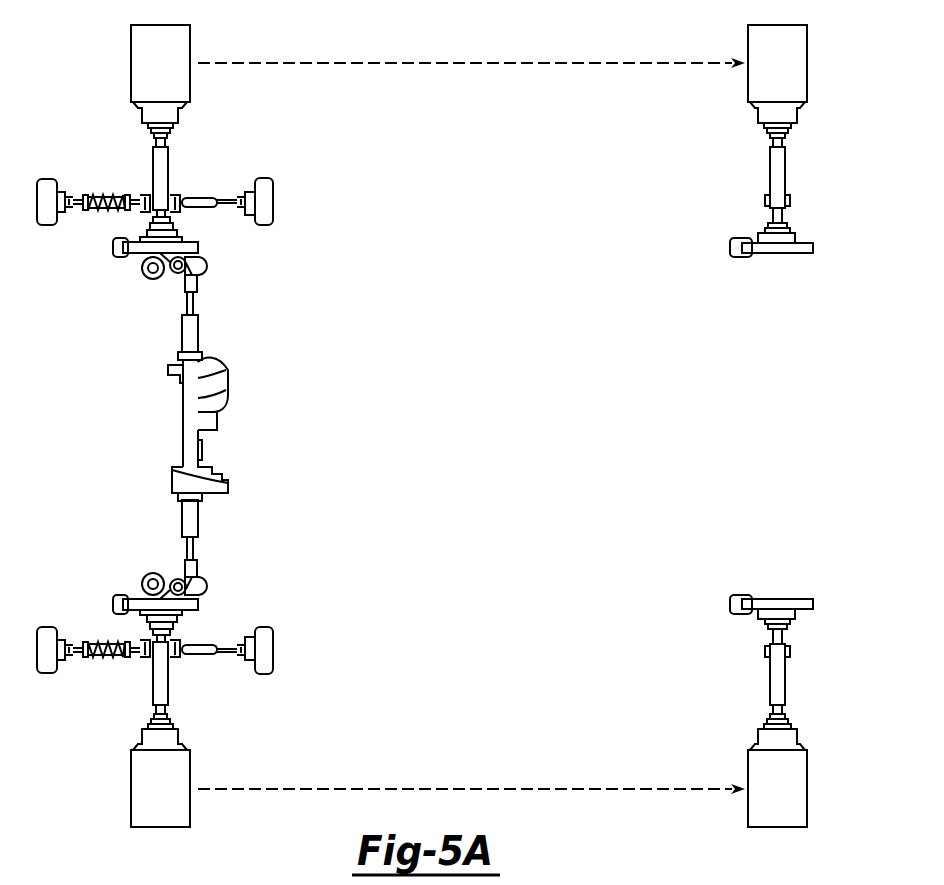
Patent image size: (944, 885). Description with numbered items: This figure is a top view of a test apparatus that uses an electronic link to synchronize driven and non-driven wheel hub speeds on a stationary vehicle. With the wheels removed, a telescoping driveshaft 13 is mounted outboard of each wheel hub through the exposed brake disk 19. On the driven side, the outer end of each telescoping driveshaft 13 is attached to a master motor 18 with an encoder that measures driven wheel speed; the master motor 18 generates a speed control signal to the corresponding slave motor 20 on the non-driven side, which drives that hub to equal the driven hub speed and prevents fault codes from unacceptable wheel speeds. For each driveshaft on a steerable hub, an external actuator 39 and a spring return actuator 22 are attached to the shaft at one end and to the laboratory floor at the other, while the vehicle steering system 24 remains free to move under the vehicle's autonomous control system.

The telescoping driveshaft 13 is at (134, 172).
The master motor 18 is at (190, 43).
The brake disk 19 is at (198, 246).
The slave motor 20 is at (807, 43).
The spring return actuator 22 is at (96, 222).
The vehicle steering system 24 is at (266, 424).
The external actuator 39 is at (200, 200).